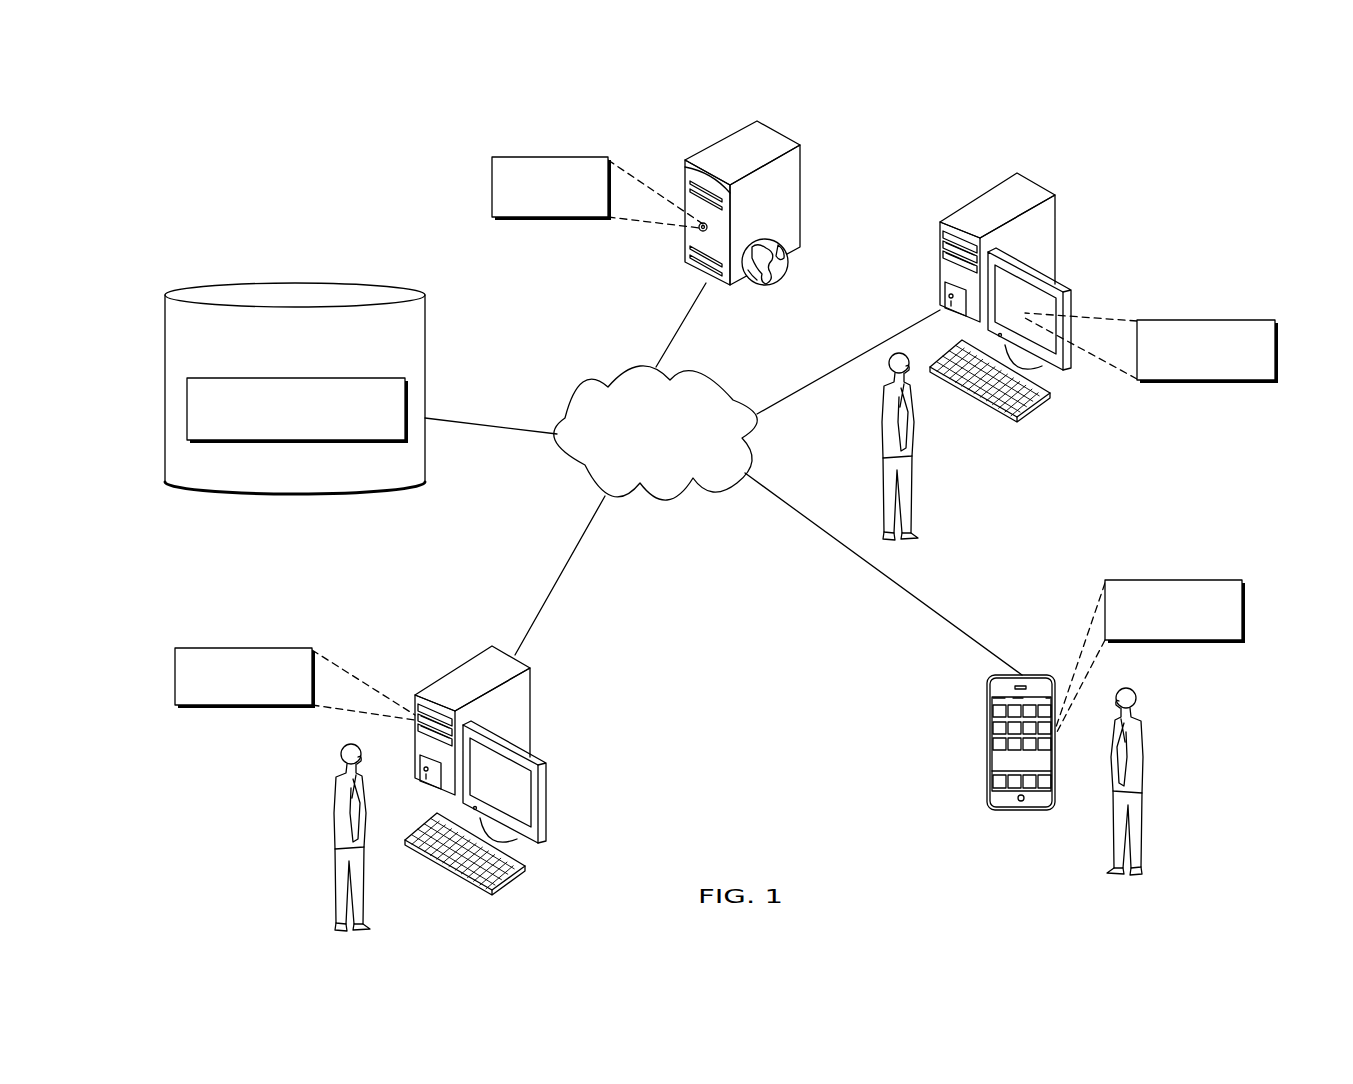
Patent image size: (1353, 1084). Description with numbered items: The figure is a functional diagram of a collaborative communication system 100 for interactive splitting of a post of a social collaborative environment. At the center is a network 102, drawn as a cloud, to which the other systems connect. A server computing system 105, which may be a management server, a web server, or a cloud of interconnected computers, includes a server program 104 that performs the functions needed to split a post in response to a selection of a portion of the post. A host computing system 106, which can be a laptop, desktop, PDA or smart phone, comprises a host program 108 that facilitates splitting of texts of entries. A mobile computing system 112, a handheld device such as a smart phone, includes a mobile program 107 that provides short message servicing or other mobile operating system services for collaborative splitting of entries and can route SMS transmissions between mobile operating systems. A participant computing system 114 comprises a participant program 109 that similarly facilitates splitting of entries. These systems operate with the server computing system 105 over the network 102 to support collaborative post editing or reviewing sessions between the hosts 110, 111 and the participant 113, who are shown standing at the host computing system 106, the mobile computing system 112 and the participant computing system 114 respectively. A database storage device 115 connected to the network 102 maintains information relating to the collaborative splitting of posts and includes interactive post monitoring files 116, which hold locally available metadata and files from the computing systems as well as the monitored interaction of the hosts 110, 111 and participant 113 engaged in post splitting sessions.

The collaborative communication system 100 is at (266, 149).
The network 102 is at (700, 372).
The server program 104 is at (521, 157).
The server computing system 105 is at (800, 198).
The host computing system 106 is at (1055, 223).
The mobile program 107 is at (1187, 580).
The host program 108 is at (1219, 320).
The participant program 109 is at (203, 650).
The host 110 is at (910, 470).
The host 111 is at (1147, 720).
The mobile computing system 112 is at (987, 805).
The participant 113 is at (331, 790).
The participant computing system 114 is at (540, 720).
The database storage device 115 is at (166, 324).
The interactive post monitoring files 116 is at (187, 419).